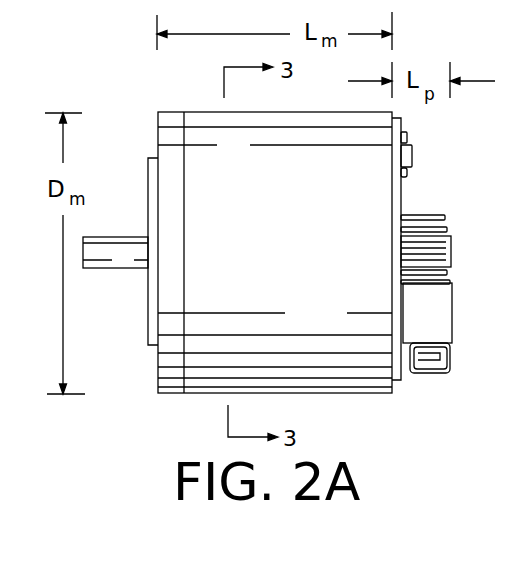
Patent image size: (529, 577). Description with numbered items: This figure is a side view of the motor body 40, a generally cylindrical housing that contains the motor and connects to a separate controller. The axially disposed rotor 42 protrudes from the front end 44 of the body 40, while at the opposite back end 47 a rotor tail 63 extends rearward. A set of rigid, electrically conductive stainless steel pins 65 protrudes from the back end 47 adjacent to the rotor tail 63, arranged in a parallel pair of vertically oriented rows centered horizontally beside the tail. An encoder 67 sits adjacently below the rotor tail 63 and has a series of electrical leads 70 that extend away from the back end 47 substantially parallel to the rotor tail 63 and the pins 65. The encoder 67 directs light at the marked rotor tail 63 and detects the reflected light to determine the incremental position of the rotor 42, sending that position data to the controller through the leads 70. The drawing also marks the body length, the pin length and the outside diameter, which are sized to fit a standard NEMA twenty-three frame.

The motor body 40 is at (372, 393).
The rotor 42 is at (98, 268).
The front end 44 is at (157, 133).
The back end 47 is at (412, 153).
The rotor tail 63 is at (451, 248).
The pins 65 is at (445, 217).
The encoder 67 is at (452, 320).
The electrical leads 70 is at (440, 357).